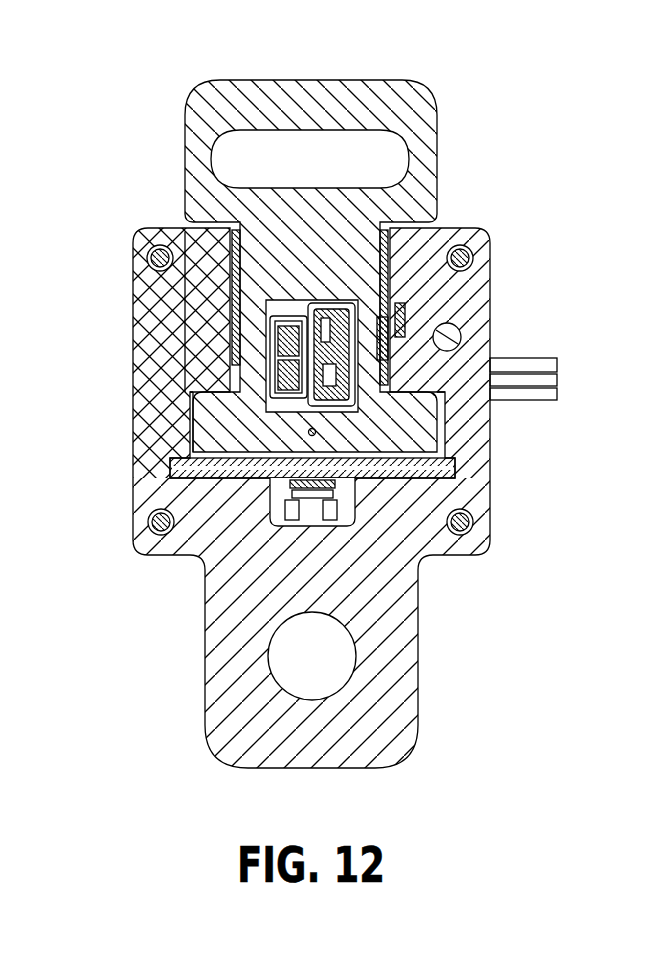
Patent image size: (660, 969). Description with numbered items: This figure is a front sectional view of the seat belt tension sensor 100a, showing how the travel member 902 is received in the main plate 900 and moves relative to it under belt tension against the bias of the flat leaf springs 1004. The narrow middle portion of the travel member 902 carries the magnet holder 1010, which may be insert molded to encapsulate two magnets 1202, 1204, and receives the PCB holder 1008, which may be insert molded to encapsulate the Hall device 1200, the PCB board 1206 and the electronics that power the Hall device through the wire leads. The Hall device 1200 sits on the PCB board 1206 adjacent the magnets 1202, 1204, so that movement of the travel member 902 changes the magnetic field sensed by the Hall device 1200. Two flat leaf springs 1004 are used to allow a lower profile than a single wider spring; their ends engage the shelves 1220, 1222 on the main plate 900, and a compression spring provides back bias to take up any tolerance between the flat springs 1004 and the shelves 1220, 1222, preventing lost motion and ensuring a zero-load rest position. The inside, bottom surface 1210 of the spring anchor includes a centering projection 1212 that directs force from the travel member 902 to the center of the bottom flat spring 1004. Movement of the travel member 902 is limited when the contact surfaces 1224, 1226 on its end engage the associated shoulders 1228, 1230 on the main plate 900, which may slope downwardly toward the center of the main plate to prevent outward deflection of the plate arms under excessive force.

The main plate 900 is at (412, 742).
The travel member 902 is at (238, 85).
The seat belt tension sensor 100a is at (430, 91).
The magnet 1202 is at (298, 305).
The magnet holder 1010 is at (283, 340).
The PCB holder 1008 is at (340, 320).
The magnet 1204 is at (268, 320).
The Hall device 1200 is at (410, 252).
The shoulder 1230 is at (418, 385).
The contact surface 1224 is at (235, 385).
The contact surface 1226 is at (462, 352).
The shoulder 1228 is at (200, 400).
The shelf 1222 is at (455, 462).
The shelf 1220 is at (187, 393).
The flat leaf springs 1004 is at (204, 474).
The PCB board 1206 is at (372, 440).
The inside bottom surface 1210 is at (272, 522).
The centering projection 1212 is at (290, 540).